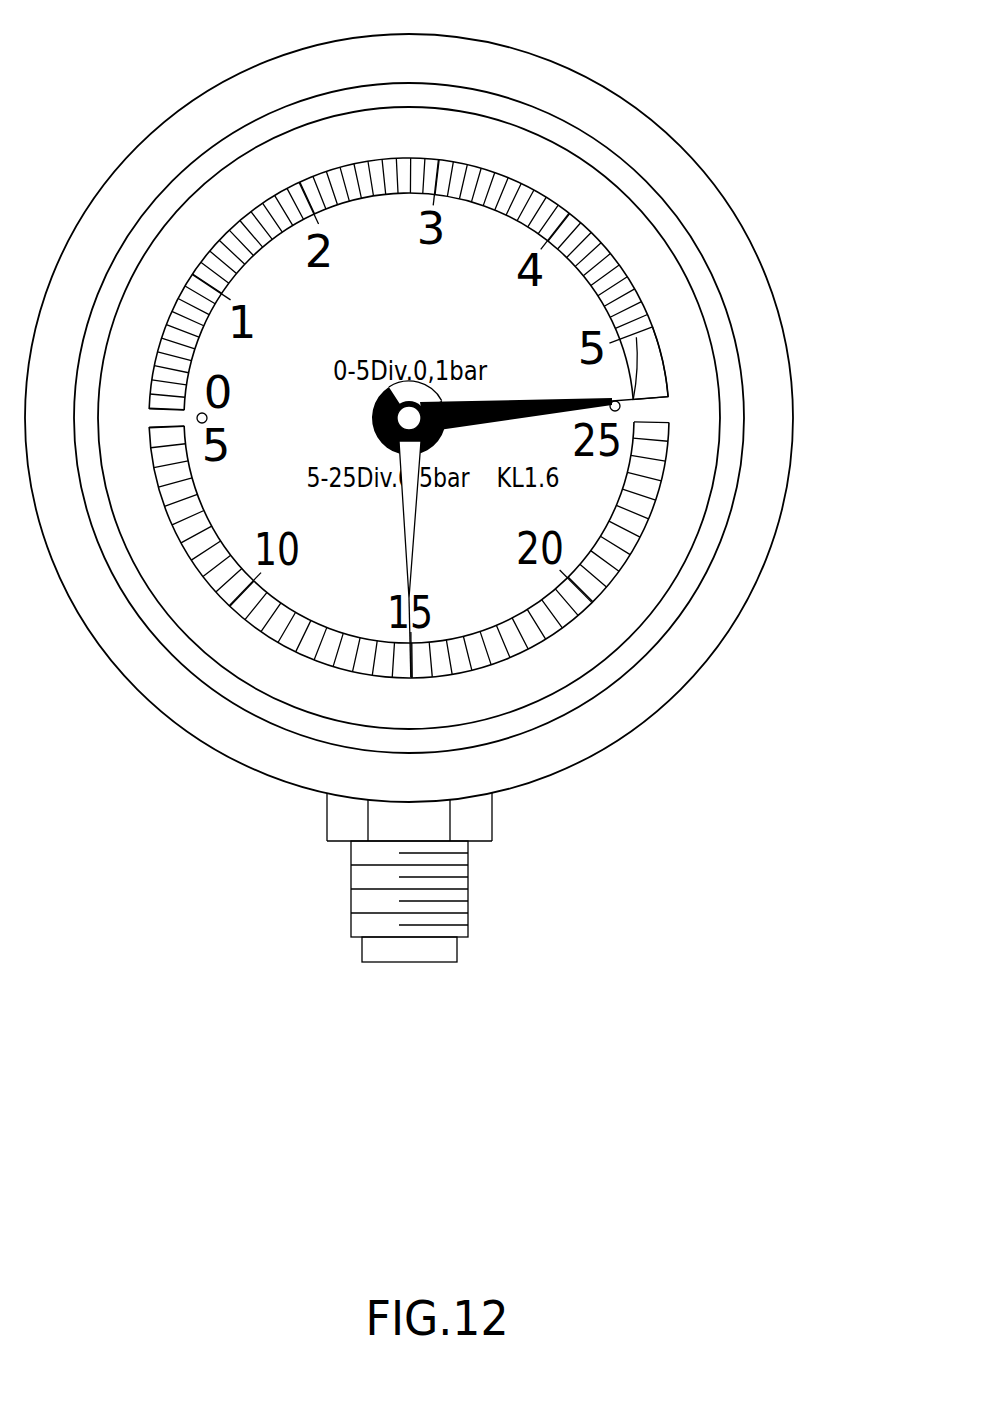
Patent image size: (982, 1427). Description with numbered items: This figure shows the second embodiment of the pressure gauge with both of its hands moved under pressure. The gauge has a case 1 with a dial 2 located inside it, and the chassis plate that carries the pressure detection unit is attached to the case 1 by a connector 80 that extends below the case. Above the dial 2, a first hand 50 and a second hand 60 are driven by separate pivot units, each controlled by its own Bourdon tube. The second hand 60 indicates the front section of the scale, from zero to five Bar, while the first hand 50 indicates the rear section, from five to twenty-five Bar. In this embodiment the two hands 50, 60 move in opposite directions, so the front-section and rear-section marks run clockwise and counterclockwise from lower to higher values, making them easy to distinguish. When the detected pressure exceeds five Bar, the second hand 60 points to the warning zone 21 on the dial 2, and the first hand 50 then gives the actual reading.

The case 1 is at (644, 77).
The dial 2 is at (356, 140).
The warning zone 21 is at (662, 369).
The first hand 50 is at (407, 542).
The second hand 60 is at (515, 403).
The connector 80 is at (350, 877).